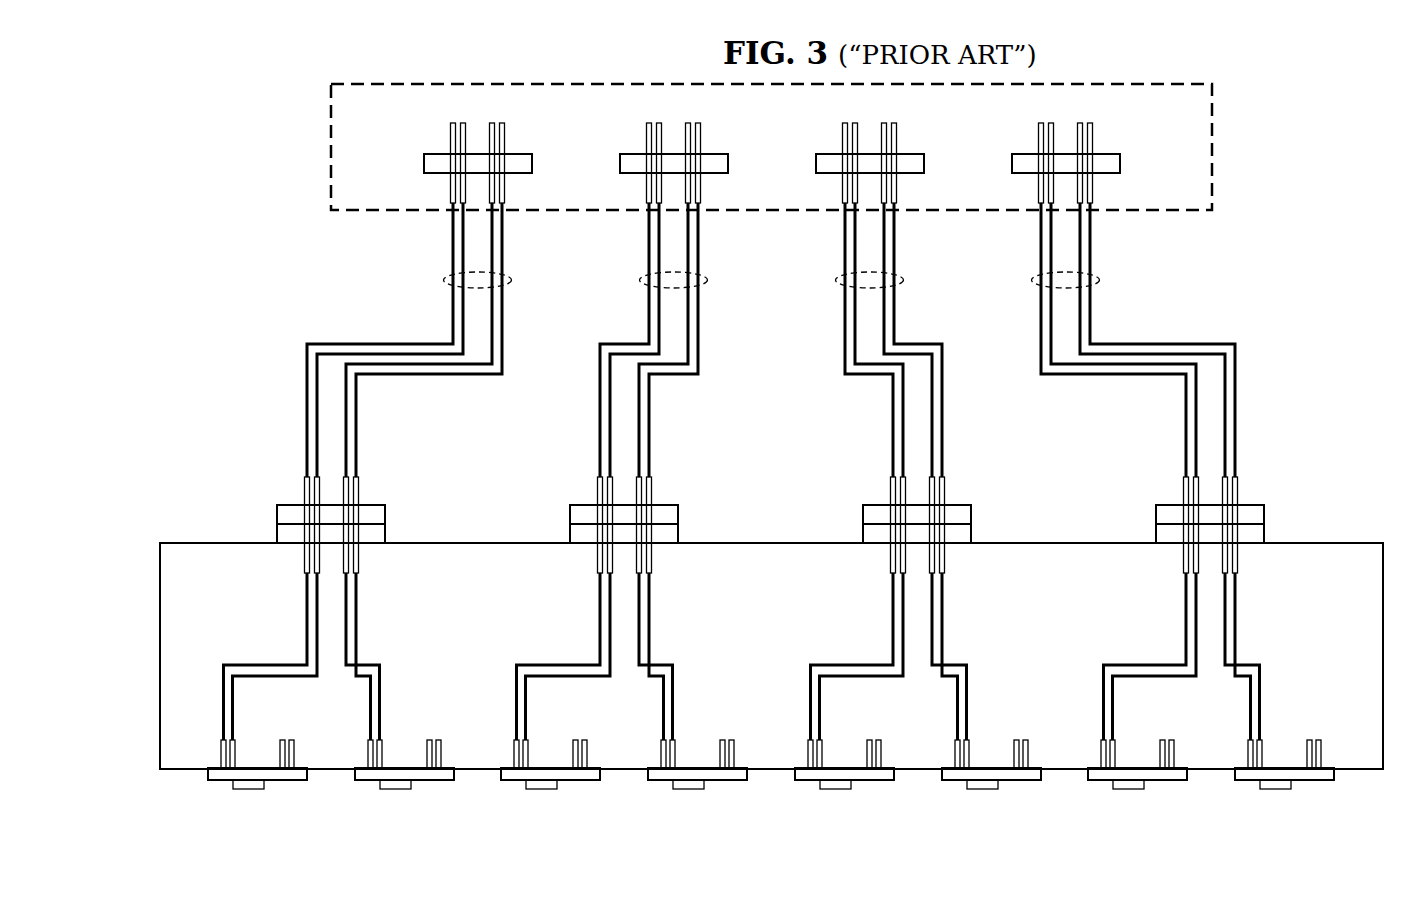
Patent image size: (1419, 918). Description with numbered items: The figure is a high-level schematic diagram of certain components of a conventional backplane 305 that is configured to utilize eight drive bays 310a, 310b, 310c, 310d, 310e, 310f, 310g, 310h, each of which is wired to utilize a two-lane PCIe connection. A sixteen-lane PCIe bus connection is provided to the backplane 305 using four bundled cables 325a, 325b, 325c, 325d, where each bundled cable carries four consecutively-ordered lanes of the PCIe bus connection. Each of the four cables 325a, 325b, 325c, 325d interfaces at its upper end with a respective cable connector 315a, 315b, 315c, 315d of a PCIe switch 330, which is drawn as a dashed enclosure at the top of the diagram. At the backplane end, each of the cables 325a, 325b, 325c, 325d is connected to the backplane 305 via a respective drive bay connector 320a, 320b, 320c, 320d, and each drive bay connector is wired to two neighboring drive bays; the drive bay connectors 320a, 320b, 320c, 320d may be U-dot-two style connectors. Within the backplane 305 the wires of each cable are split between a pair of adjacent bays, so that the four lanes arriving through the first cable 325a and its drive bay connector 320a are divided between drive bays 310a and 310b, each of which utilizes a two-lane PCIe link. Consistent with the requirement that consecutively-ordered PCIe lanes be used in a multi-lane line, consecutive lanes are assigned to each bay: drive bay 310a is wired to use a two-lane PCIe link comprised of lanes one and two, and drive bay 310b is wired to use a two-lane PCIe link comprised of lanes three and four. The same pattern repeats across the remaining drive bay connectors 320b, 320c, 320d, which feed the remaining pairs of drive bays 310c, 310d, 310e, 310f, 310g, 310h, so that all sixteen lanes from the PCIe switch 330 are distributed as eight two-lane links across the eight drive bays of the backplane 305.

The backplane 305 is at (771, 543).
The drive bay 310a is at (247, 791).
The drive bay 310b is at (394, 791).
The drive bay 310c is at (540, 791).
The drive bay 310d is at (687, 791).
The drive bay 310e is at (835, 791).
The drive bay 310f is at (982, 791).
The drive bay 310g is at (1128, 791).
The drive bay 310h is at (1275, 791).
The cable connector 315a is at (424, 161).
The cable connector 315b is at (620, 161).
The cable connector 315c is at (924, 161).
The cable connector 315d is at (1120, 161).
The drive bay connector 320a is at (277, 518).
The drive bay connector 320b is at (570, 518).
The drive bay connector 320c is at (971, 513).
The drive bay connector 320d is at (1264, 513).
The bundled cable 325a is at (444, 280).
The bundled cable 325b is at (640, 280).
The bundled cable 325c is at (903, 280).
The bundled cable 325d is at (1099, 280).
The PCIe switch 330 is at (331, 137).